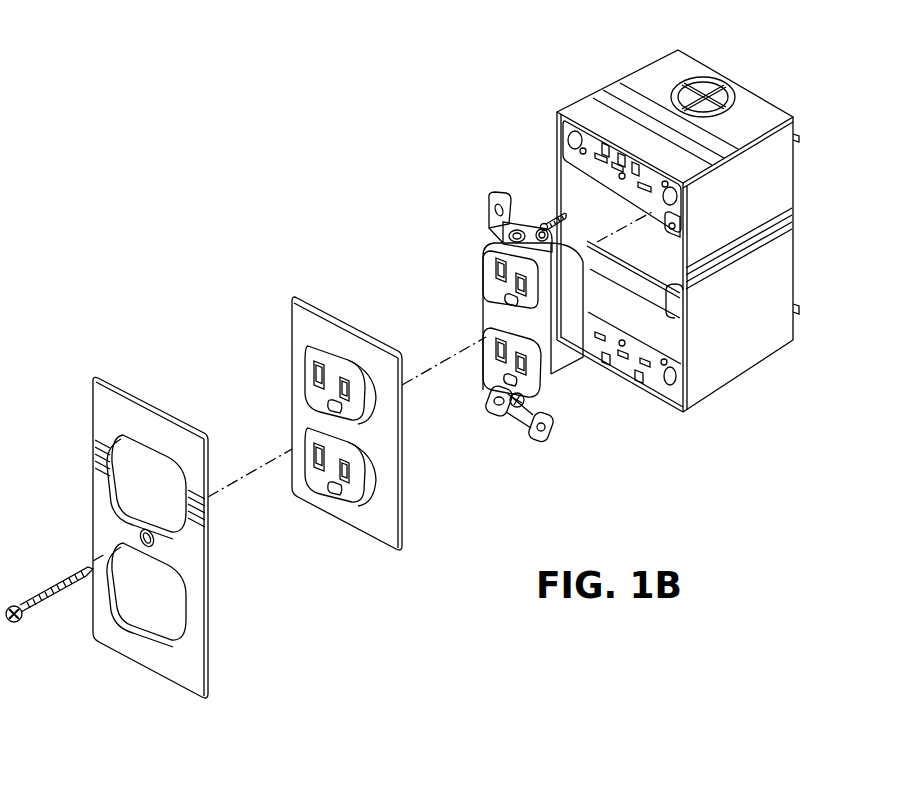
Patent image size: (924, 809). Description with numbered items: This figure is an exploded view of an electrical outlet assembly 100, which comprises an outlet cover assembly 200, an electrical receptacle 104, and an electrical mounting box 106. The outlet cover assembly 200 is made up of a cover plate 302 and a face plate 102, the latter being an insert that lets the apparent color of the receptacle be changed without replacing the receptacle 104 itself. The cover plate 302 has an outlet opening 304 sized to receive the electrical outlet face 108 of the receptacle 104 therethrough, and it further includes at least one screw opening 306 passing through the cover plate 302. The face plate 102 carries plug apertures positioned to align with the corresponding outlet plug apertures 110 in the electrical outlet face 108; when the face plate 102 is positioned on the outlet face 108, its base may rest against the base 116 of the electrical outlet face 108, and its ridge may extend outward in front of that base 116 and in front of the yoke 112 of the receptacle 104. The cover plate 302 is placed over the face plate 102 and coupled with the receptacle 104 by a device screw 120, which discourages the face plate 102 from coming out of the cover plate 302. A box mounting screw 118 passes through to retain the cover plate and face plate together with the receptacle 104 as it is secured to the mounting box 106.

The outlet assembly 100 is at (226, 96).
The face plate 102 is at (390, 526).
The electrical receptacle 104 is at (562, 360).
The electrical mounting box 106 is at (757, 328).
The electrical outlet face 108 is at (487, 279).
The outlet plug apertures 110 is at (490, 258).
The yoke 112 is at (537, 218).
The base of the electrical outlet face 116 is at (492, 315).
The box mounting screw 118 is at (572, 218).
The device screw 120 is at (53, 582).
The outlet cover assembly 200 is at (295, 268).
The cover plate 302 is at (196, 659).
The outlet opening 304 is at (188, 605).
The screw opening 306 is at (152, 543).